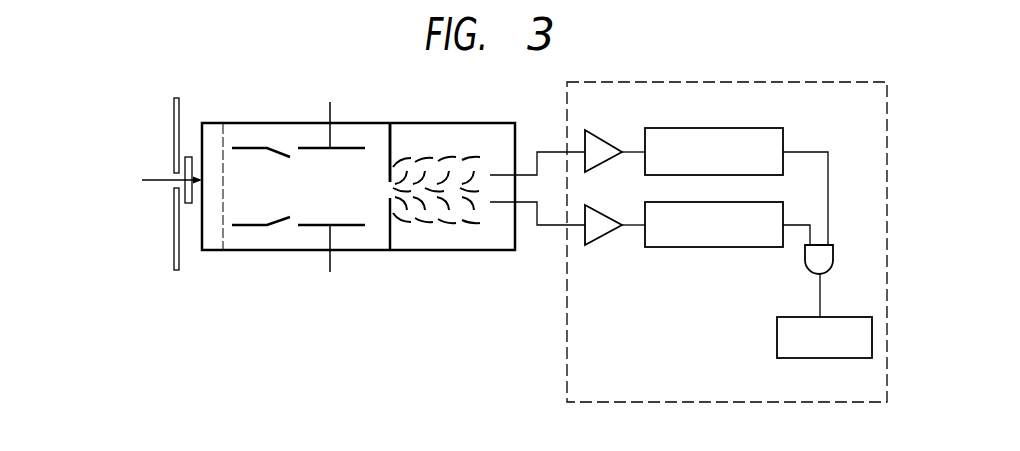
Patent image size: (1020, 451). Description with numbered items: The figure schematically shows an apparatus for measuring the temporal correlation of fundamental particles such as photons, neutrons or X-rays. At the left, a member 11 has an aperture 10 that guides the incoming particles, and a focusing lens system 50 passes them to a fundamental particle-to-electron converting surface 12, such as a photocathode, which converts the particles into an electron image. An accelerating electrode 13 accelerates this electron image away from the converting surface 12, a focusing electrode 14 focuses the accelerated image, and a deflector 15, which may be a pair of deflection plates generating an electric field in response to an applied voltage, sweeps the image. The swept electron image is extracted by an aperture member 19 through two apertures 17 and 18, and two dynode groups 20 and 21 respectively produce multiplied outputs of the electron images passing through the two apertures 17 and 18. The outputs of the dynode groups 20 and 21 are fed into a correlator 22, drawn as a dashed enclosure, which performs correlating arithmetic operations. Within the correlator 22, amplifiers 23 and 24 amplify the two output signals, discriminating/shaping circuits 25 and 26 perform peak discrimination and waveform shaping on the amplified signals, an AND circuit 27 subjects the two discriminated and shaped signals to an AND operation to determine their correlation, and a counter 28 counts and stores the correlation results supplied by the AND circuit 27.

The aperture 10 is at (165, 177).
The member 11 is at (177, 271).
The focusing lens system 50 is at (188, 157).
The fundamental particle-to-electron converting surface 12 is at (203, 251).
The accelerating electrode 13 is at (224, 240).
The focusing electrode 14 is at (257, 227).
The deflector 15 is at (345, 228).
The aperture 17 is at (389, 183).
The aperture 18 is at (389, 198).
The aperture member 19 is at (392, 144).
The dynode group 20 is at (471, 157).
The dynode group 21 is at (482, 215).
The correlator 22 is at (836, 82).
The amplifier 23 is at (601, 130).
The amplifier 24 is at (601, 205).
The discriminating/shaping circuit 25 is at (745, 128).
The discriminating/shaping circuit 26 is at (745, 203).
The AND circuit 27 is at (834, 258).
The counter 28 is at (777, 333).